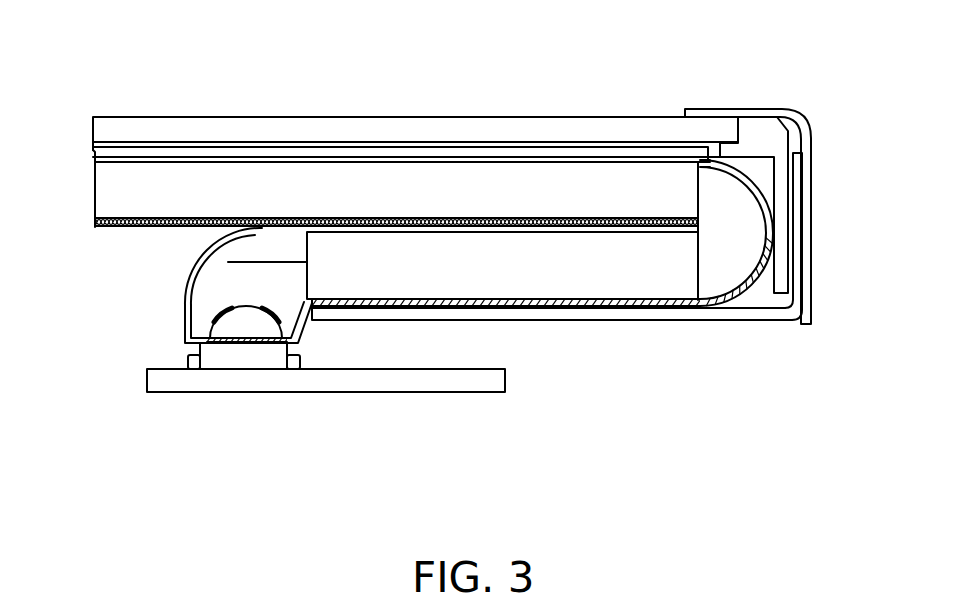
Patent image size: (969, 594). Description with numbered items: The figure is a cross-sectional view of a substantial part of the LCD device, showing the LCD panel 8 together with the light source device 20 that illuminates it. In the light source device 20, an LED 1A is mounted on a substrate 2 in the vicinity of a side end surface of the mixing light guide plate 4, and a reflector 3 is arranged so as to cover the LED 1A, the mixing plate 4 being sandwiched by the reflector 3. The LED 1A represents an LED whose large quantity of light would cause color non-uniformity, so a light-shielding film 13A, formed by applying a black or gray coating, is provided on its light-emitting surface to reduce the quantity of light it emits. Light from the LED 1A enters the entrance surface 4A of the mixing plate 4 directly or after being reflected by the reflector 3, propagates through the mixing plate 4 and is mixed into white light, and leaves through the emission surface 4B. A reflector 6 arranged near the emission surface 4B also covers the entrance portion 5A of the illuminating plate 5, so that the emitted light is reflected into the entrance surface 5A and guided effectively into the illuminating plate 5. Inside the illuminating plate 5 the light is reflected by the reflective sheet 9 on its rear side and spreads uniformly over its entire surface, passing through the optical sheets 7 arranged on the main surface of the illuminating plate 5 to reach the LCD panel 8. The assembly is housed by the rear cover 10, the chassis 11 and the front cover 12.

The LED 1A is at (244, 395).
The substrate 2 is at (326, 420).
The reflector 3 is at (196, 285).
The mixing light guide plate 4 is at (502, 325).
The entrance surface 4A is at (207, 255).
The emission surface 4B is at (552, 324).
The illuminating plate 5 is at (401, 165).
The entrance portion 5A is at (806, 196).
The reflector 6 is at (806, 277).
The optical sheets 7 is at (433, 97).
The LCD panel 8 is at (415, 93).
The reflective sheet 9 is at (396, 317).
The rear cover 10 is at (552, 360).
The chassis 11 is at (814, 205).
The front cover 12 is at (794, 211).
The light-shielding film 13A is at (147, 270).
The light source device 20 is at (76, 414).